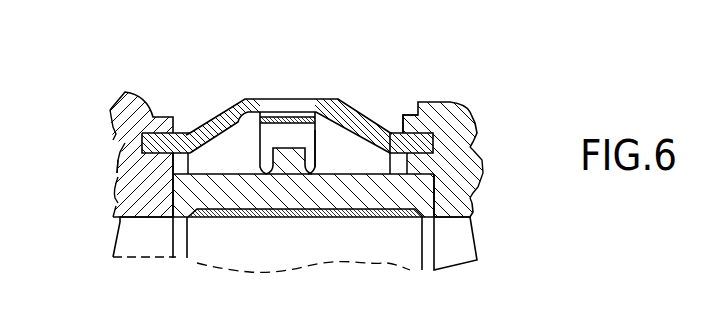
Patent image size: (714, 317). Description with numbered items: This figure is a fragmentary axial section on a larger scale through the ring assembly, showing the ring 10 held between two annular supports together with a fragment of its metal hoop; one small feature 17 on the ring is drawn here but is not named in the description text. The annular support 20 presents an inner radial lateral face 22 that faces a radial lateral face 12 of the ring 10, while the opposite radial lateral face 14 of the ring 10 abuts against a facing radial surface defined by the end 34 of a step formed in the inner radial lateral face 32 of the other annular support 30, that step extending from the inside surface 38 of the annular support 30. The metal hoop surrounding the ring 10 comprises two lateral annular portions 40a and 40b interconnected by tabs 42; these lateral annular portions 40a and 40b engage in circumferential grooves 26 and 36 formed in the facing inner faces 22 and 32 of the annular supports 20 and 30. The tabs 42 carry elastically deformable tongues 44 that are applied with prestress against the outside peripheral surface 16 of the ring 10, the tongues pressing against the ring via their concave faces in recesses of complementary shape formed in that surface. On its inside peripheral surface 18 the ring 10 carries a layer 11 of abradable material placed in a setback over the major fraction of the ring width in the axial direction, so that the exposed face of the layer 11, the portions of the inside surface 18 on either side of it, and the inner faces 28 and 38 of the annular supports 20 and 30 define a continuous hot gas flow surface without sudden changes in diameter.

The ring 10 is at (317, 202).
The layer of abradable material 11 is at (388, 220).
The radial lateral face 12 is at (173, 197).
The radial lateral face 14 is at (220, 222).
The outside peripheral surface 16 is at (333, 174).
The projection 17 is at (292, 148).
The inside peripheral surface 18 is at (438, 220).
The annular support 20 is at (118, 124).
The inner radial lateral face 22 is at (187, 133).
The circumferential groove 26 is at (136, 174).
The inner face 28 is at (124, 222).
The annular support 30 is at (433, 113).
The inner radial lateral face 32 is at (402, 125).
The end of step 34 is at (429, 193).
The circumferential groove 36 is at (437, 150).
The inside surface 38 is at (468, 227).
The lateral annular portion 40a is at (157, 138).
The lateral annular portion 40b is at (417, 138).
The tab 42 is at (241, 107).
The elastically deformable tongue 44 is at (301, 133).